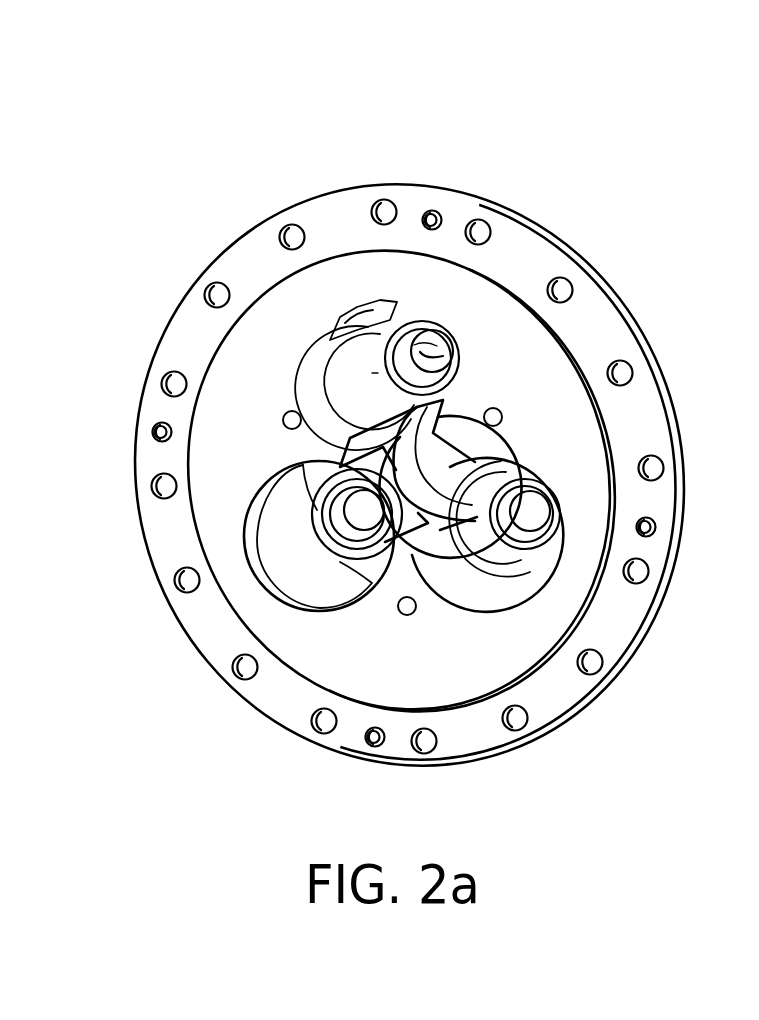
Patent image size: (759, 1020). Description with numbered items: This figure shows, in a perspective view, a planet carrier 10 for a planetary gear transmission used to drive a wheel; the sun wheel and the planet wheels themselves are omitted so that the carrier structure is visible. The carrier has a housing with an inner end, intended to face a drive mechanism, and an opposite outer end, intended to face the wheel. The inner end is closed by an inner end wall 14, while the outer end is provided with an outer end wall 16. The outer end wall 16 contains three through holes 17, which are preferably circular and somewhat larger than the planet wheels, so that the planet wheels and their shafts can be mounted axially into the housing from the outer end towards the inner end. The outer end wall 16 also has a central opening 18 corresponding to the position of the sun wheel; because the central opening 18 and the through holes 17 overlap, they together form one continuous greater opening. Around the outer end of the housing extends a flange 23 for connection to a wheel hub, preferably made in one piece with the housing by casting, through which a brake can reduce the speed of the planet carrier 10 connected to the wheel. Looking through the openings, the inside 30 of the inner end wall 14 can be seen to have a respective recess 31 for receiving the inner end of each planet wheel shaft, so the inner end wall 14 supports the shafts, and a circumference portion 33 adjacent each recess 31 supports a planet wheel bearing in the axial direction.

The planet carrier 10 is at (266, 102).
The inner end wall 14 is at (383, 350).
The outer end wall 16 is at (213, 456).
The through holes 17 is at (333, 337).
The central opening 18 is at (404, 481).
The flange 23 is at (196, 329).
The inside 30 is at (356, 373).
The recess 31 is at (412, 320).
The circumference portion 33 is at (387, 317).